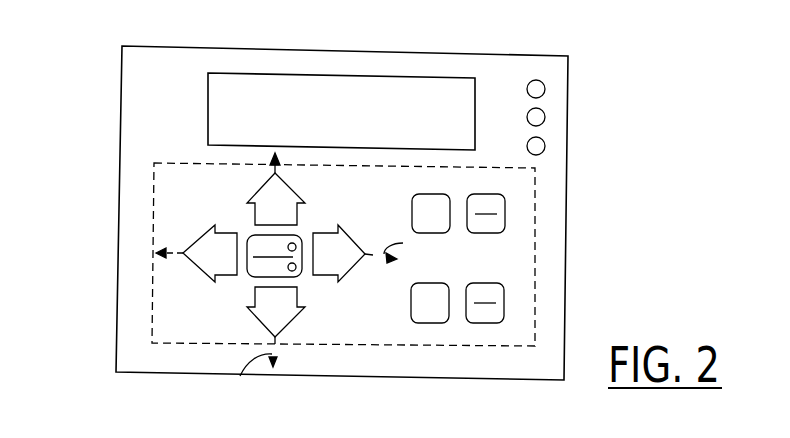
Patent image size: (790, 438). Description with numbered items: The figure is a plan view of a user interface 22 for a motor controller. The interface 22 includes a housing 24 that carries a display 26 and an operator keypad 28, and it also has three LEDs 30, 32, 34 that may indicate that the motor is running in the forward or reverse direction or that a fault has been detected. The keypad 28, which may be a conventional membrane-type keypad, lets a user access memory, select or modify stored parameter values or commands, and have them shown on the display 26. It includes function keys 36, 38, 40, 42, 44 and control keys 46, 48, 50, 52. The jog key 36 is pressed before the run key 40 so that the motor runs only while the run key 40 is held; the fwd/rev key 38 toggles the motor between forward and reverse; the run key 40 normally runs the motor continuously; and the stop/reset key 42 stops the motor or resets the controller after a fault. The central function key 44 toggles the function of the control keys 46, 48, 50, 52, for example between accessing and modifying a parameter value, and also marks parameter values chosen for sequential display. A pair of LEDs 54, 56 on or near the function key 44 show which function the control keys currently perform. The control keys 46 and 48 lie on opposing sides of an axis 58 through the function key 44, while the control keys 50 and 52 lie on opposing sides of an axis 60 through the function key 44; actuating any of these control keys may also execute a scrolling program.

The interface 22 is at (697, 80).
The housing 24 is at (120, 120).
The display 26 is at (208, 92).
The operator keypad 28 is at (172, 163).
The LED 30 is at (545, 85).
The LED 32 is at (545, 113).
The LED 34 is at (545, 145).
The jog key 36 is at (448, 231).
The fwd/rev key 38 is at (503, 231).
The run key 40 is at (410, 318).
The stop/reset key 42 is at (505, 313).
The function key 44 is at (246, 278).
The control key 46 is at (199, 240).
The control key 48 is at (345, 238).
The control key 50 is at (259, 193).
The control key 52 is at (255, 322).
The LED 54 is at (297, 241).
The LED 56 is at (300, 273).
The axis 58 is at (248, 380).
The axis 60 is at (412, 251).